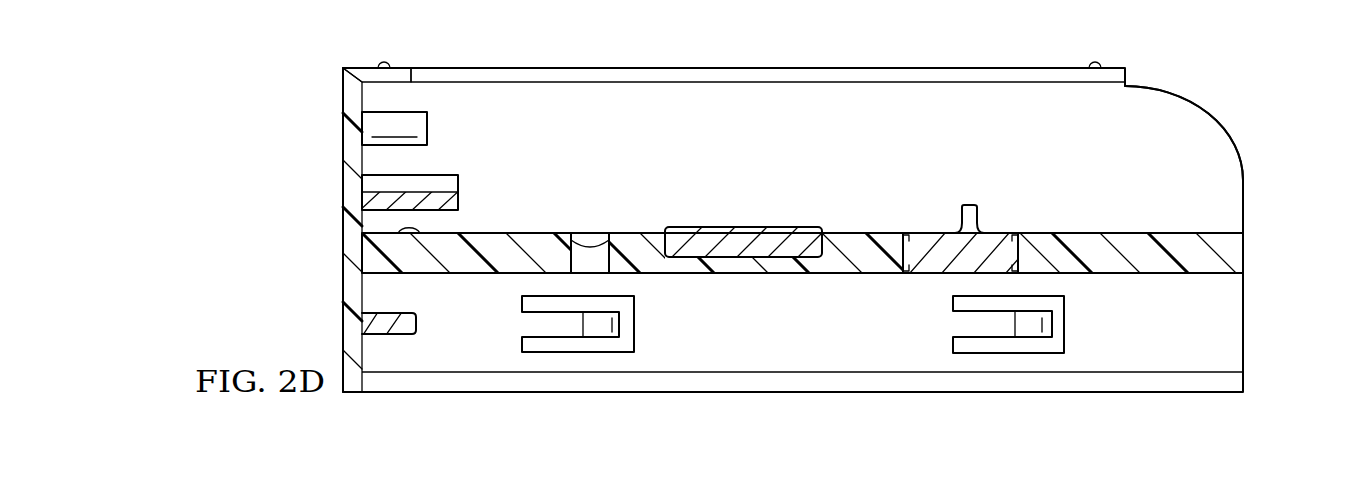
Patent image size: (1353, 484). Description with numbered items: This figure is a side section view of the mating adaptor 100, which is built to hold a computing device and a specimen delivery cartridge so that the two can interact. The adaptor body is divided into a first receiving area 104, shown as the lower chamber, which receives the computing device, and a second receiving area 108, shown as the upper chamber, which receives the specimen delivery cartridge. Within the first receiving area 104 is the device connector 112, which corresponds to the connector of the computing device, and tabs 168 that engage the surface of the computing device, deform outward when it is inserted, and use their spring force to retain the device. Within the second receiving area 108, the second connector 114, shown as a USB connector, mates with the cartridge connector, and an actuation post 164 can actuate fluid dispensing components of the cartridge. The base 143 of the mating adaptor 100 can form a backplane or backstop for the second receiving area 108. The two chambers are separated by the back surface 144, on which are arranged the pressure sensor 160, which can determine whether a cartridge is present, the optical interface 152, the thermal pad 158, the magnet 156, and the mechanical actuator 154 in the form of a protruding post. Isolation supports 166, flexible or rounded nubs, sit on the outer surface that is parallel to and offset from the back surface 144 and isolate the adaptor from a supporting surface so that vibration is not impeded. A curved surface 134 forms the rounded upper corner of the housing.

The mating adaptor 100 is at (278, 110).
The first receiving area 104 is at (1238, 323).
The second receiving area 108 is at (1236, 207).
The device connector 112 is at (413, 325).
The second connector 114 is at (446, 174).
The curved housing surface 134 is at (1212, 122).
The base 143 is at (365, 100).
The back surface 144 is at (738, 275).
The optical interface 152 is at (592, 242).
The mechanical actuator 154 is at (969, 203).
The magnet 156 is at (930, 275).
The thermal pad 158 is at (743, 232).
The pressure sensor 160 is at (402, 231).
The actuation post 164 is at (393, 111).
The isolation supports 166 is at (386, 66).
The tabs 168 is at (636, 322).